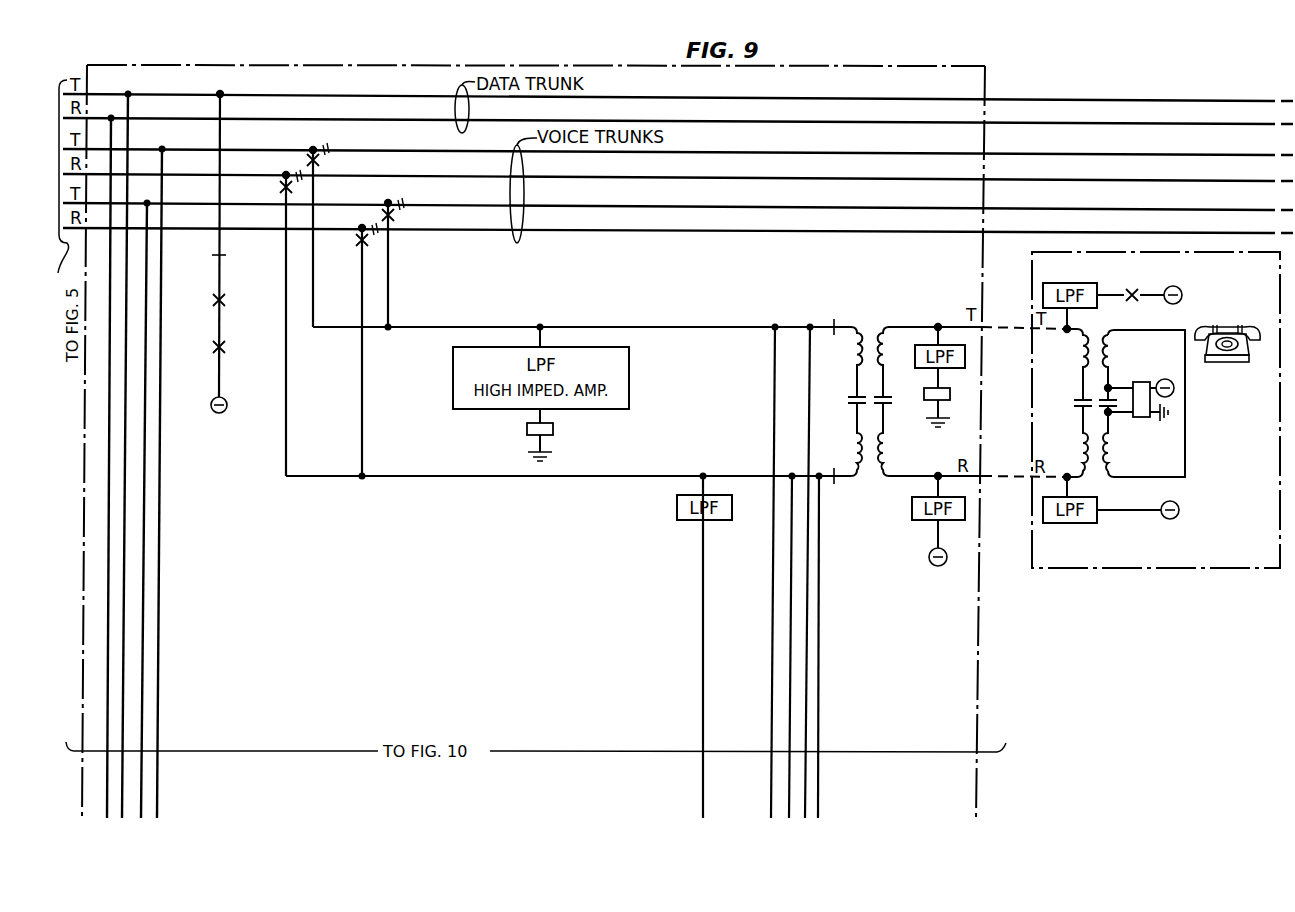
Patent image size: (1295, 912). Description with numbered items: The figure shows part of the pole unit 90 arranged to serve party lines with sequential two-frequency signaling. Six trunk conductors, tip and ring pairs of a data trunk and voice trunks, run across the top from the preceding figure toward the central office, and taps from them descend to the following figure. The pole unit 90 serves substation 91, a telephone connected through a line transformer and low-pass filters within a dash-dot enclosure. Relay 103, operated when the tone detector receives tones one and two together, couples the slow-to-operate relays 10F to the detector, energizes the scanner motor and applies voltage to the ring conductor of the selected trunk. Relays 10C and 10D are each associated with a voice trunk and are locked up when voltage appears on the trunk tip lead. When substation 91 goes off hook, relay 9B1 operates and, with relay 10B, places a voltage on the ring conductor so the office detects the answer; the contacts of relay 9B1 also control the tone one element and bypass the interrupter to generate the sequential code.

The relay 103 is at (236, 300).
The relay 10B is at (236, 347).
The relay 10D is at (322, 150).
The relay 10C is at (398, 213).
The slow-to-operate relay 10F is at (879, 404).
The relay 9B1 is at (924, 399).
The substation 91 is at (1227, 330).
The pole unit 90 is at (976, 637).